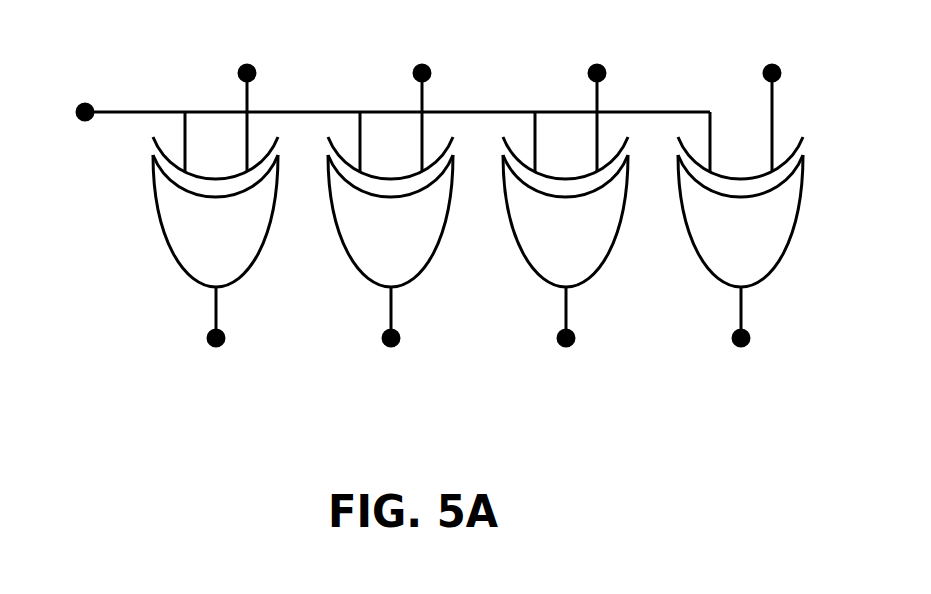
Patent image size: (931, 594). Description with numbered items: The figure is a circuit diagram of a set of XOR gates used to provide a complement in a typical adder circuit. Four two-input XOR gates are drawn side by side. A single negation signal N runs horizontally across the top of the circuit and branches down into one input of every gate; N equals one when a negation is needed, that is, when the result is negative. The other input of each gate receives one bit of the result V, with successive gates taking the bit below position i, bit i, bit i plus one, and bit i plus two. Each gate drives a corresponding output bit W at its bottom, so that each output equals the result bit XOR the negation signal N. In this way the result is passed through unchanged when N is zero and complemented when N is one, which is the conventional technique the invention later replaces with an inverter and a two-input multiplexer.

The negation signal N is at (373, 135).